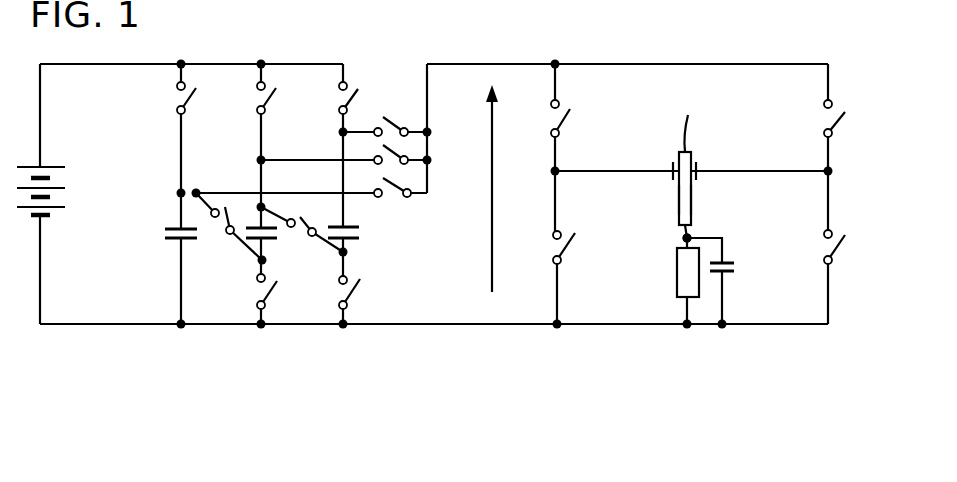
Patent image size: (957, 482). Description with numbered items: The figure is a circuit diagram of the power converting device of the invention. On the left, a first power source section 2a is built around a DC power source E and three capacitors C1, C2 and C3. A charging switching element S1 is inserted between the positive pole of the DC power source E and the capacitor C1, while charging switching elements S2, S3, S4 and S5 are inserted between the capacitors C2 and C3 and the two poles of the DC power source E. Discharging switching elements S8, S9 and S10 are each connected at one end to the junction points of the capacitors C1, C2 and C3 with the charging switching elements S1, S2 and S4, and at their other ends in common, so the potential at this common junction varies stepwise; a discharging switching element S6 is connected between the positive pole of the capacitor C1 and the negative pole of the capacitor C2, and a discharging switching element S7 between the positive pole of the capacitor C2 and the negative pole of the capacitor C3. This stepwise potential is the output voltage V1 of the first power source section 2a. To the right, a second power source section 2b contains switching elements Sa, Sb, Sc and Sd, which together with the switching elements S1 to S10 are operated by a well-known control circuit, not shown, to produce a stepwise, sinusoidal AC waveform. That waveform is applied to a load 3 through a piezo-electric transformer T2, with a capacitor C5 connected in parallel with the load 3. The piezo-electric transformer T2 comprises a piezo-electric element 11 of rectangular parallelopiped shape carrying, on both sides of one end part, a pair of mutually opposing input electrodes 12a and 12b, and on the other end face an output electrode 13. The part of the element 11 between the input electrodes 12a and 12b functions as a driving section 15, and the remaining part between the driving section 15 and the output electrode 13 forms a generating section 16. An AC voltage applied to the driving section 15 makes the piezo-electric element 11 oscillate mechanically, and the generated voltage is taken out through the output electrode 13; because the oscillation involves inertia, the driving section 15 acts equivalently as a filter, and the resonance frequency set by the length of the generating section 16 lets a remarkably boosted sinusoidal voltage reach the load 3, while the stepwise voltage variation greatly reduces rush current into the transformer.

The DC power source E is at (44, 139).
The charging switching element S1 is at (161, 94).
The charging switching element S2 is at (241, 94).
The charging switching element S3 is at (241, 295).
The charging switching element S4 is at (324, 94).
The charging switching element S5 is at (325, 296).
The discharging switching element S6 is at (228, 235).
The discharging switching element S7 is at (302, 242).
The discharging switching element S8 is at (392, 111).
The discharging switching element S9 is at (397, 150).
The discharging switching element S10 is at (419, 206).
The capacitor C1 is at (161, 232).
The capacitor C2 is at (252, 224).
The capacitor C3 is at (365, 243).
The capacitor C5 is at (743, 281).
The output voltage V1 is at (508, 188).
The switching element Sa is at (539, 100).
The switching element Sb is at (541, 249).
The switching element Sc is at (807, 100).
The switching element Sd is at (810, 247).
The piezo-electric transformer T2 is at (691, 195).
The driving section 15 is at (695, 118).
The input electrode 12a is at (673, 166).
The input electrode 12b is at (696, 166).
The generating section 16 is at (678, 197).
The piezo-electric element 11 is at (692, 212).
The output electrode 13 is at (684, 233).
The load 3 is at (680, 280).
The first power source section 2a is at (328, 329).
The second power source section 2b is at (580, 329).